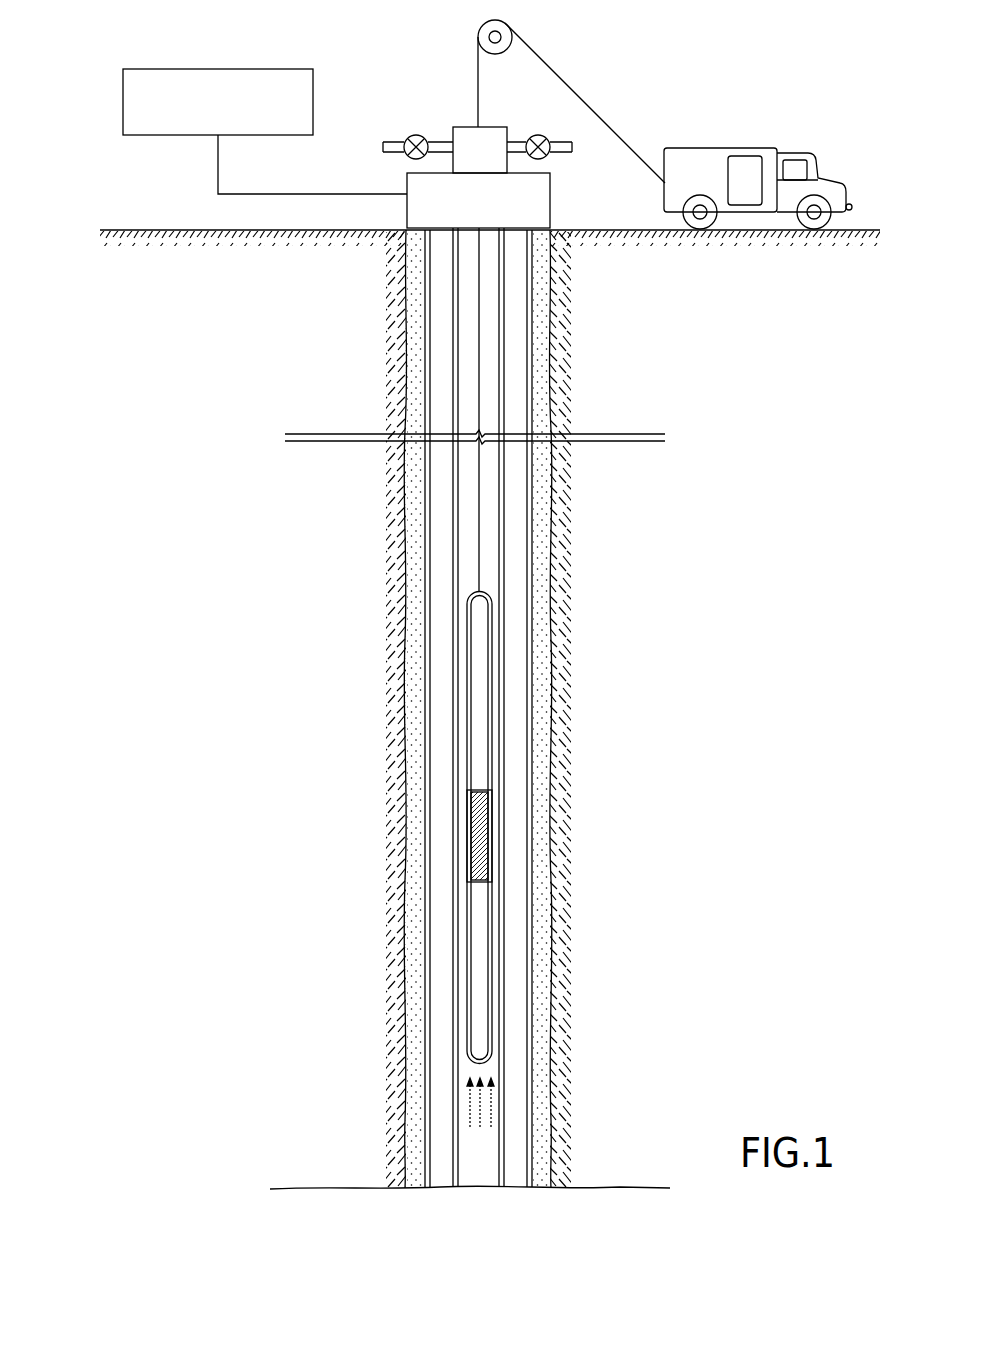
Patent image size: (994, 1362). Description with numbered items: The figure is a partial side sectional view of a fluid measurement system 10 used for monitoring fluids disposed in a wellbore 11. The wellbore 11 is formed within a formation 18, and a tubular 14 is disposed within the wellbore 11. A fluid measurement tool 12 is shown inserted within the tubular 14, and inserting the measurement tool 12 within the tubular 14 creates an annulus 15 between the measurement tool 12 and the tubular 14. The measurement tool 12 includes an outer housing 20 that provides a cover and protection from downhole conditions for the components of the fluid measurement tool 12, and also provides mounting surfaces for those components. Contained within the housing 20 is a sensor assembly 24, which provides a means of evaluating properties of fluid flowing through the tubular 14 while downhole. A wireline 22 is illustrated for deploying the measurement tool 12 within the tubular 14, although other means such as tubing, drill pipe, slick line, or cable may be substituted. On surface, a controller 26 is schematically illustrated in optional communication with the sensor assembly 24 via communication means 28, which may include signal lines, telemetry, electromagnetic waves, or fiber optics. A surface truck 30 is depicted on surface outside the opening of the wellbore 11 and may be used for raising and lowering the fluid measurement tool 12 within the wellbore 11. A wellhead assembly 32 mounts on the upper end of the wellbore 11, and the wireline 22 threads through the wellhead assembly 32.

The fluid measurement system 10 is at (102, 163).
The wellbore 11 is at (428, 1131).
The fluid measurement tool 12 is at (516, 658).
The tubular 14 is at (507, 1135).
The annulus 15 is at (491, 603).
The formation 18 is at (639, 902).
The outer housing 20 is at (468, 1033).
The wireline 22 is at (482, 482).
The sensor assembly 24 is at (470, 825).
The controller 26 is at (207, 68).
The communication means 28 is at (218, 170).
The surface truck 30 is at (742, 142).
The wellhead assembly 32 is at (449, 107).